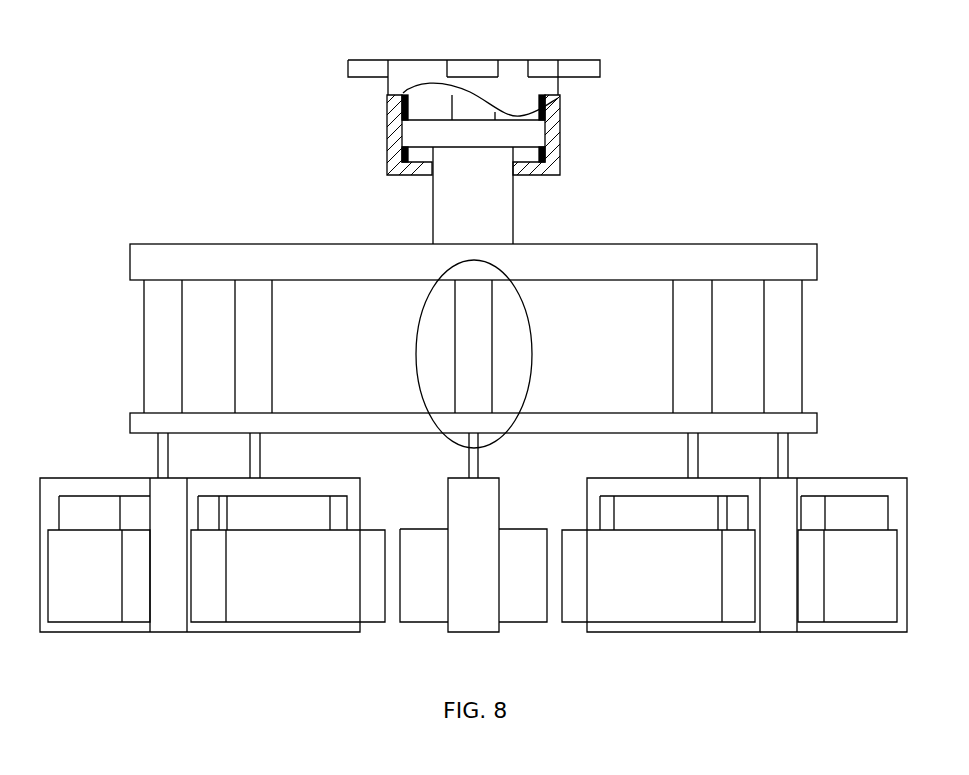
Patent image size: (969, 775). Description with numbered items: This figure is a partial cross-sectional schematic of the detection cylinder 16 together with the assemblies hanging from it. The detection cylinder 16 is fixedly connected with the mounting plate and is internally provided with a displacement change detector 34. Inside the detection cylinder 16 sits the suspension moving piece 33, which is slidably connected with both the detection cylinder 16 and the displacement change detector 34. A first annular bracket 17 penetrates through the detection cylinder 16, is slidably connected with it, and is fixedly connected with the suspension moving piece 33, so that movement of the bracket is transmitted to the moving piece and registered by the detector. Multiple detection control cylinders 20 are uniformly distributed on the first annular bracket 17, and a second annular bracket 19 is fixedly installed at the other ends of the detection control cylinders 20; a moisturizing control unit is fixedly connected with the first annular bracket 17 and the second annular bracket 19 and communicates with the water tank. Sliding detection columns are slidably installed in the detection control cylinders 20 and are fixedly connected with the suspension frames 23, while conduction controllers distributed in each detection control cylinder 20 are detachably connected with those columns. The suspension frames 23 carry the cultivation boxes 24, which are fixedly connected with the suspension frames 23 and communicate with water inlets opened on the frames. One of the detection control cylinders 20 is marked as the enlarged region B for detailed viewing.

The detection cylinder 16 is at (557, 109).
The suspension moving piece 33 is at (468, 138).
The displacement change detector 34 is at (406, 96).
The first annular bracket 17 is at (314, 268).
The detection control cylinder 20 is at (688, 318).
The detail region B is at (530, 321).
The second annular bracket 19 is at (323, 422).
The suspension frame 23 is at (479, 584).
The cultivation box 24 is at (633, 582).